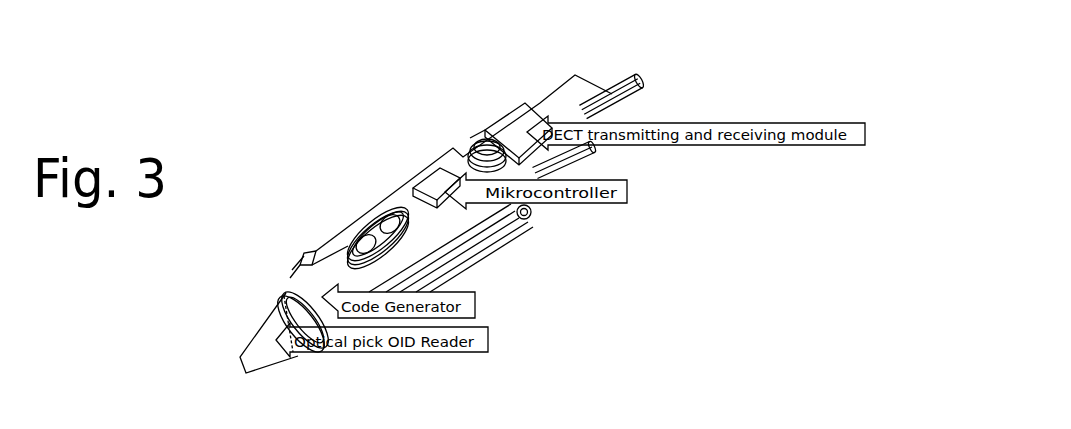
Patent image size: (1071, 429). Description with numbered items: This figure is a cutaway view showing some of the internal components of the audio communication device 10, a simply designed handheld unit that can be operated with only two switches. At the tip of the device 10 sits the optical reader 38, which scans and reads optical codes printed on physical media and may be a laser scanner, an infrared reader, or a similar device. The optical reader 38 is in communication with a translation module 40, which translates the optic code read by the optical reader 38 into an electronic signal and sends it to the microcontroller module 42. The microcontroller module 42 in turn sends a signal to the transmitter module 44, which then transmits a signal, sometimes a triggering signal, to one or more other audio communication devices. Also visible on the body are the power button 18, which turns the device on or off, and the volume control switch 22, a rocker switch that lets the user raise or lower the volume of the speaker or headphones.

The audio communication device 10 is at (281, 121).
The power button 18 is at (486, 146).
The volume control switch 22 is at (360, 218).
The optical reader 38 is at (240, 366).
The translation module 40 is at (296, 306).
The microcontroller module 42 is at (433, 185).
The transmitter module 44 is at (522, 127).